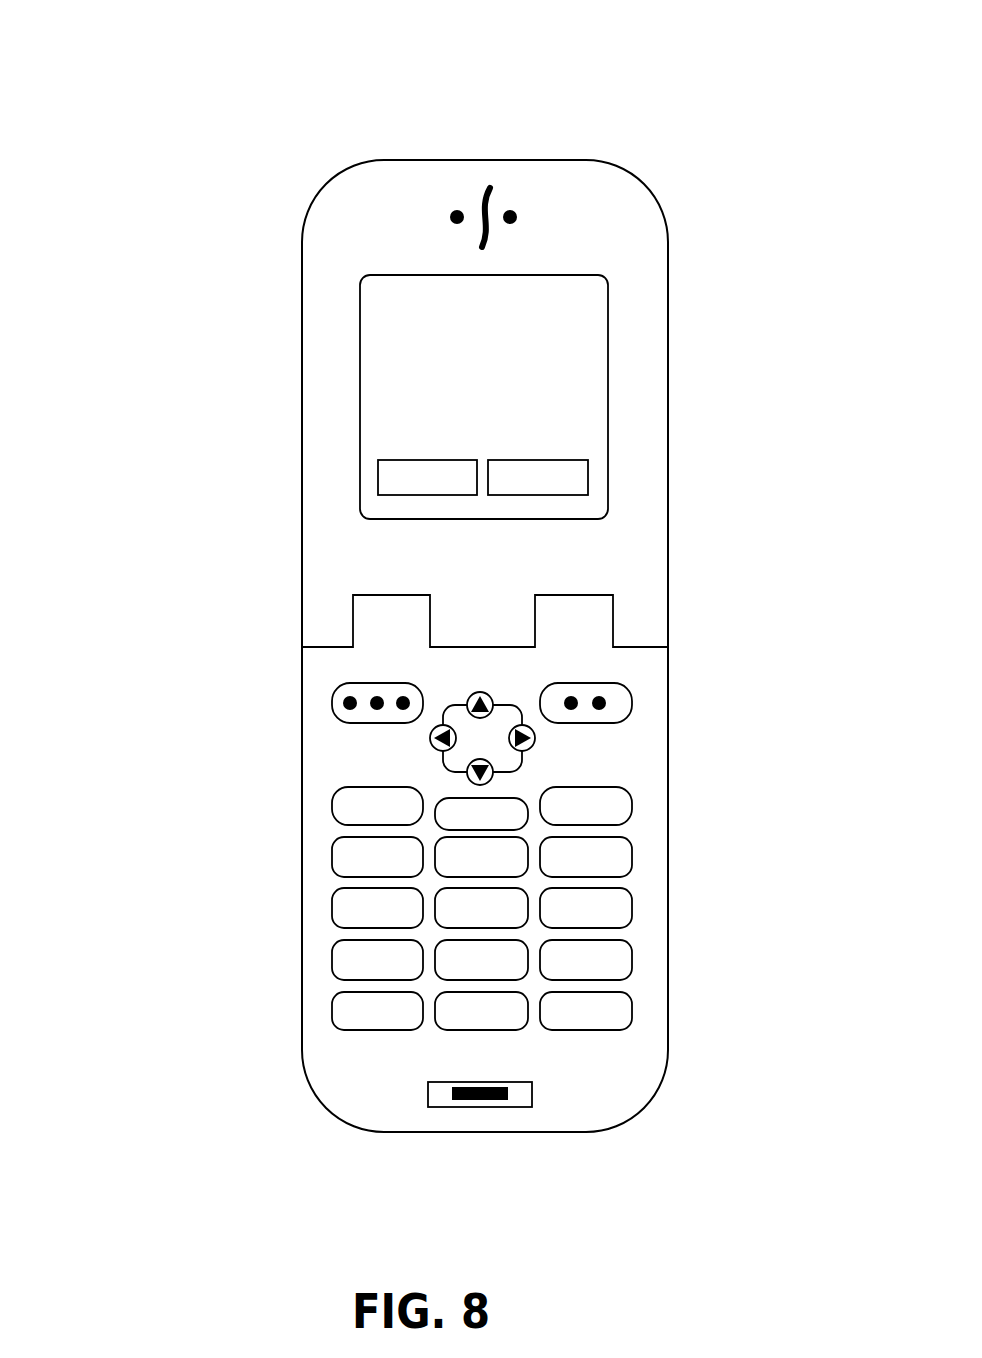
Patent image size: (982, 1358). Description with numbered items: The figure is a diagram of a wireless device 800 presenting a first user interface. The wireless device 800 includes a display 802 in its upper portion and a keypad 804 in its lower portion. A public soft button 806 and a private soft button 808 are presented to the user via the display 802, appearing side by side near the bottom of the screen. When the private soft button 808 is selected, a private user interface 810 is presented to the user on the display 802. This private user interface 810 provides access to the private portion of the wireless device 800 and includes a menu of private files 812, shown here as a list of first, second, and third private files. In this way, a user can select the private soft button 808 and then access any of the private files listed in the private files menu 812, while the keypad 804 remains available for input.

The wireless device 800 is at (223, 140).
The display 802 is at (575, 275).
The keypad 804 is at (620, 770).
The public soft button 806 is at (378, 473).
The private soft button 808 is at (588, 470).
The private user interface 810 is at (415, 310).
The menu of private files 812 is at (568, 360).